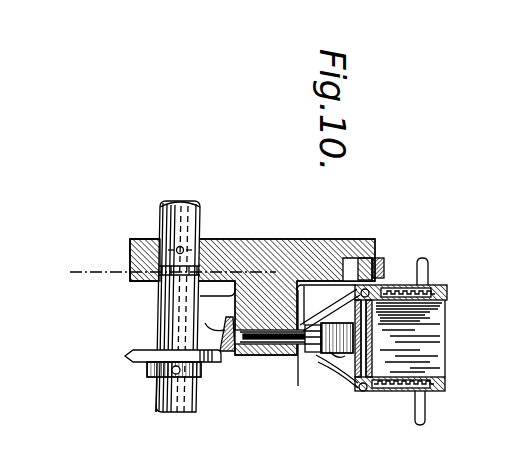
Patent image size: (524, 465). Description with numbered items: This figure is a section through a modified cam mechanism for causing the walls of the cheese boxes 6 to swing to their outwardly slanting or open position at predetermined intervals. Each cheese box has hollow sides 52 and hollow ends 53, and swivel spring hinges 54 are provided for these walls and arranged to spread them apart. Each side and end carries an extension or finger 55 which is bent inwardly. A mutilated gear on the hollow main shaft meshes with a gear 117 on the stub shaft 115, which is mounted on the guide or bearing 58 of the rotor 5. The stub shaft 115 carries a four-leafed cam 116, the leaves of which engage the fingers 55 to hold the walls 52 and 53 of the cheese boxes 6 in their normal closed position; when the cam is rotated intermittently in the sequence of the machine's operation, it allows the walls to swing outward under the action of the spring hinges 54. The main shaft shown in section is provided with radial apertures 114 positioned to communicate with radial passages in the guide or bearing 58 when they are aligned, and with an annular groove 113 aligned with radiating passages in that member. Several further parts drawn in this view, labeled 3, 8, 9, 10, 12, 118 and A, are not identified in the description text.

The radial apertures 114 is at (158, 226).
The cheese boxes 6 is at (443, 372).
The pin 8 is at (277, 194).
The annular groove 113 is at (158, 281).
The rotor 5 is at (220, 238).
The body 9 is at (246, 239).
The bolt 12 is at (359, 239).
The four-leafed cam 116 is at (313, 323).
The hollow sides 52 is at (399, 285).
The gear 117 is at (220, 320).
The bar 118 is at (206, 370).
The stub shaft 115 is at (249, 356).
The guide or bearing 58 is at (270, 346).
The finger 55 is at (316, 358).
The link 3 is at (336, 359).
The lever 10 is at (348, 392).
The swivel spring hinges 54 is at (363, 394).
The hollow ends 53 is at (437, 330).
The assembly A is at (156, 394).